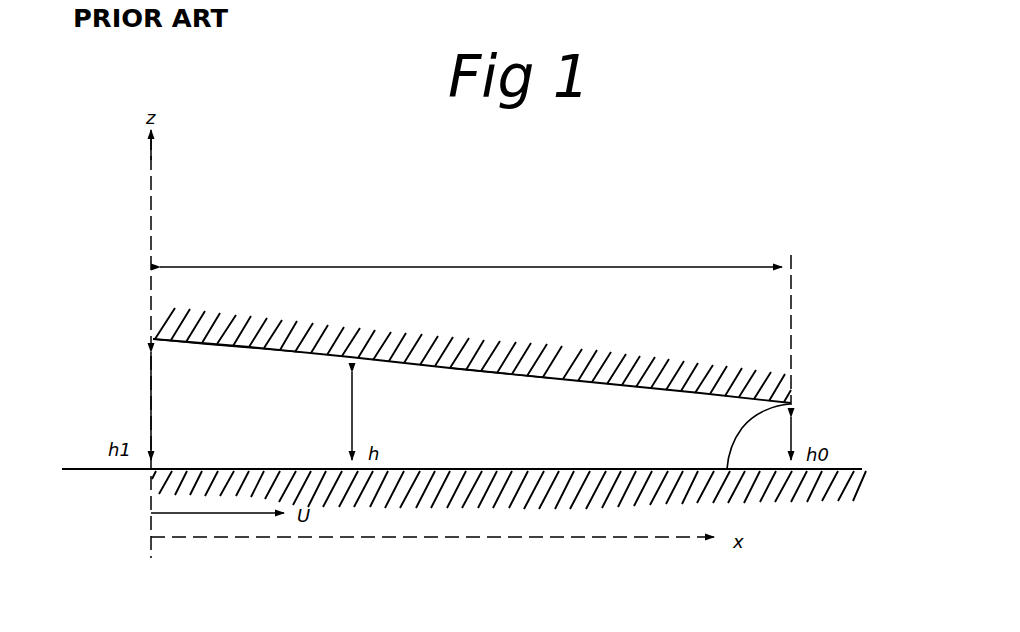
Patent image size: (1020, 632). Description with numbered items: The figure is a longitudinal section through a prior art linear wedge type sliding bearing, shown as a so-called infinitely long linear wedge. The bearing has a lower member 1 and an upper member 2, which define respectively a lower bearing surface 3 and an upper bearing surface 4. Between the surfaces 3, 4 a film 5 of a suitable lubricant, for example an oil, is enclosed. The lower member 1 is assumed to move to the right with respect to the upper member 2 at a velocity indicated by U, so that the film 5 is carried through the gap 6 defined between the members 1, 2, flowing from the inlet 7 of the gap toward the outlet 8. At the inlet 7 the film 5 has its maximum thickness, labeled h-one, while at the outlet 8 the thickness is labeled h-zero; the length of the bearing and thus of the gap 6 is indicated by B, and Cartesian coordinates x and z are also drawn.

The lower member 1 is at (758, 492).
The upper member 2 is at (697, 373).
The lower bearing surface 3 is at (790, 408).
The upper bearing surface 4 is at (205, 343).
The film 5 is at (535, 408).
The gap 6 is at (266, 376).
The inlet 7 is at (162, 425).
The outlet 8 is at (794, 437).